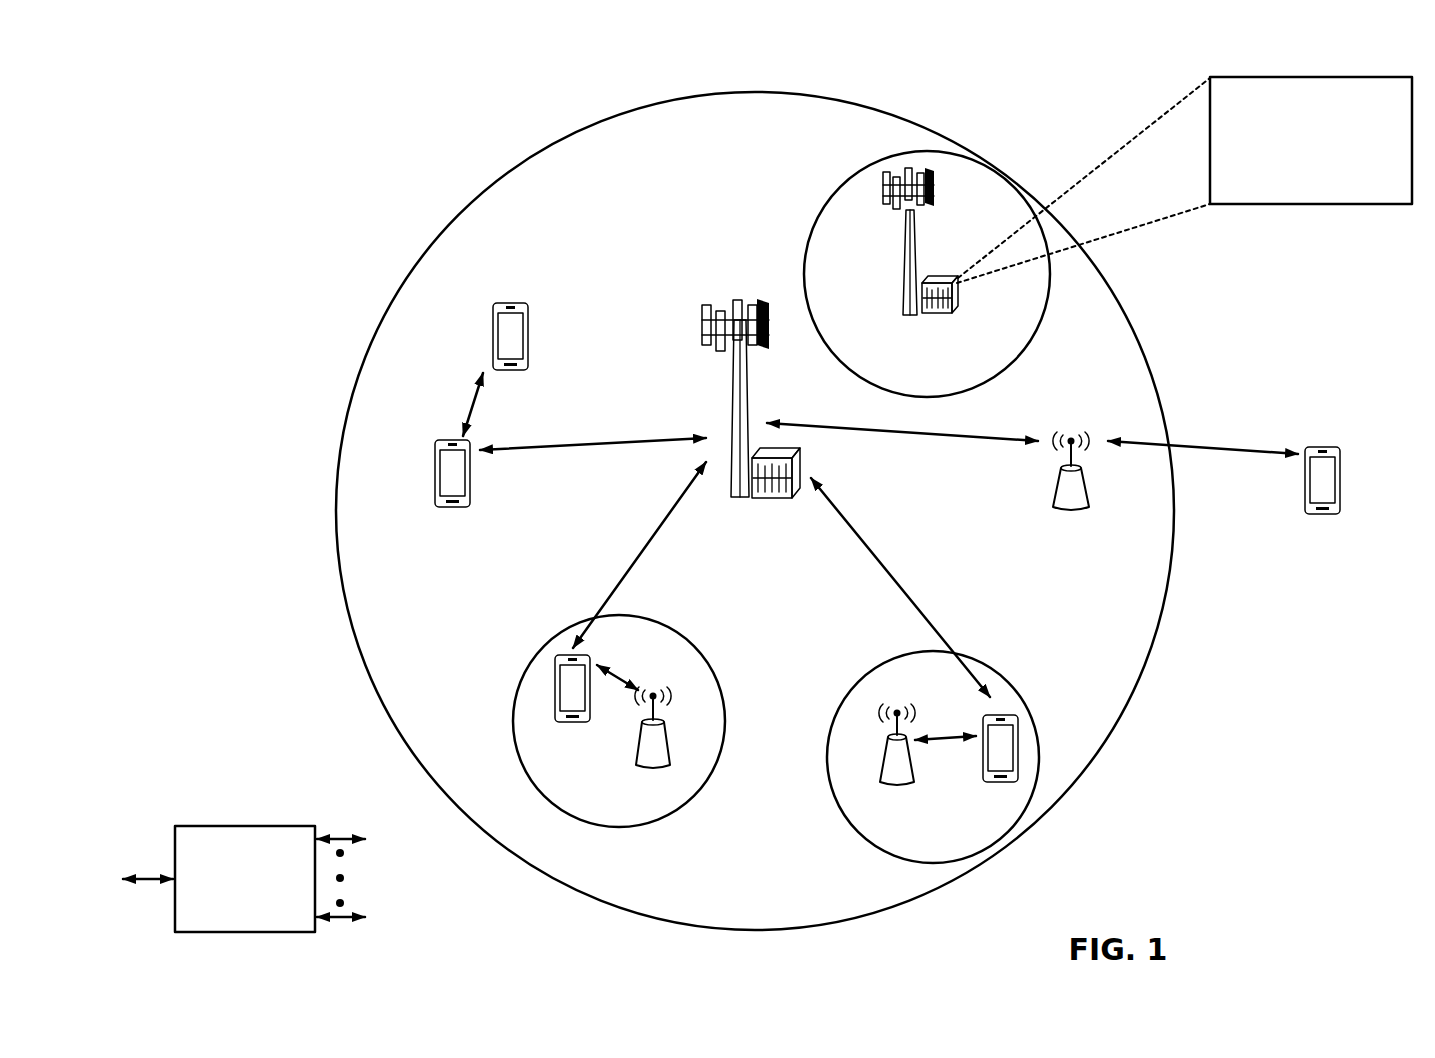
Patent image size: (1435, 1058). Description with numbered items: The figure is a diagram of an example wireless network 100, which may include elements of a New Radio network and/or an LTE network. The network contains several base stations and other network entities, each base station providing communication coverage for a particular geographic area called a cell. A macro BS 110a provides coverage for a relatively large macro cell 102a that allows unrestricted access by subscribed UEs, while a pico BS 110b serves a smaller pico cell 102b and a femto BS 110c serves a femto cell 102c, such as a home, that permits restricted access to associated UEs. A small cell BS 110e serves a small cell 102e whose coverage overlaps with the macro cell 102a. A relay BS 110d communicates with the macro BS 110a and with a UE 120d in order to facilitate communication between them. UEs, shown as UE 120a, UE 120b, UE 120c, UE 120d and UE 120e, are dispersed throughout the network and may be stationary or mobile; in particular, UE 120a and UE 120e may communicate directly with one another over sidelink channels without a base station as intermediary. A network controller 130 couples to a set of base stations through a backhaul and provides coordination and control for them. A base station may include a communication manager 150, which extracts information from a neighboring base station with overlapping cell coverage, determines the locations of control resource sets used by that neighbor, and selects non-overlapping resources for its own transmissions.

The wireless network 100 is at (232, 90).
The macro cell 102a is at (882, 105).
The pico cell 102b is at (707, 660).
The femto cell 102c is at (870, 666).
The small cell 102e is at (1033, 200).
The macro BS 110a is at (745, 298).
The pico BS 110b is at (678, 756).
The femto BS 110c is at (880, 772).
The relay BS 110d is at (1072, 436).
The small cell BS 110e is at (940, 272).
The UE 120a is at (434, 470).
The UE 120b is at (568, 723).
The UE 120c is at (983, 784).
The UE 120d is at (1336, 447).
The UE 120e is at (494, 322).
The network controller 130 is at (245, 825).
The communication manager 150 is at (1311, 140).